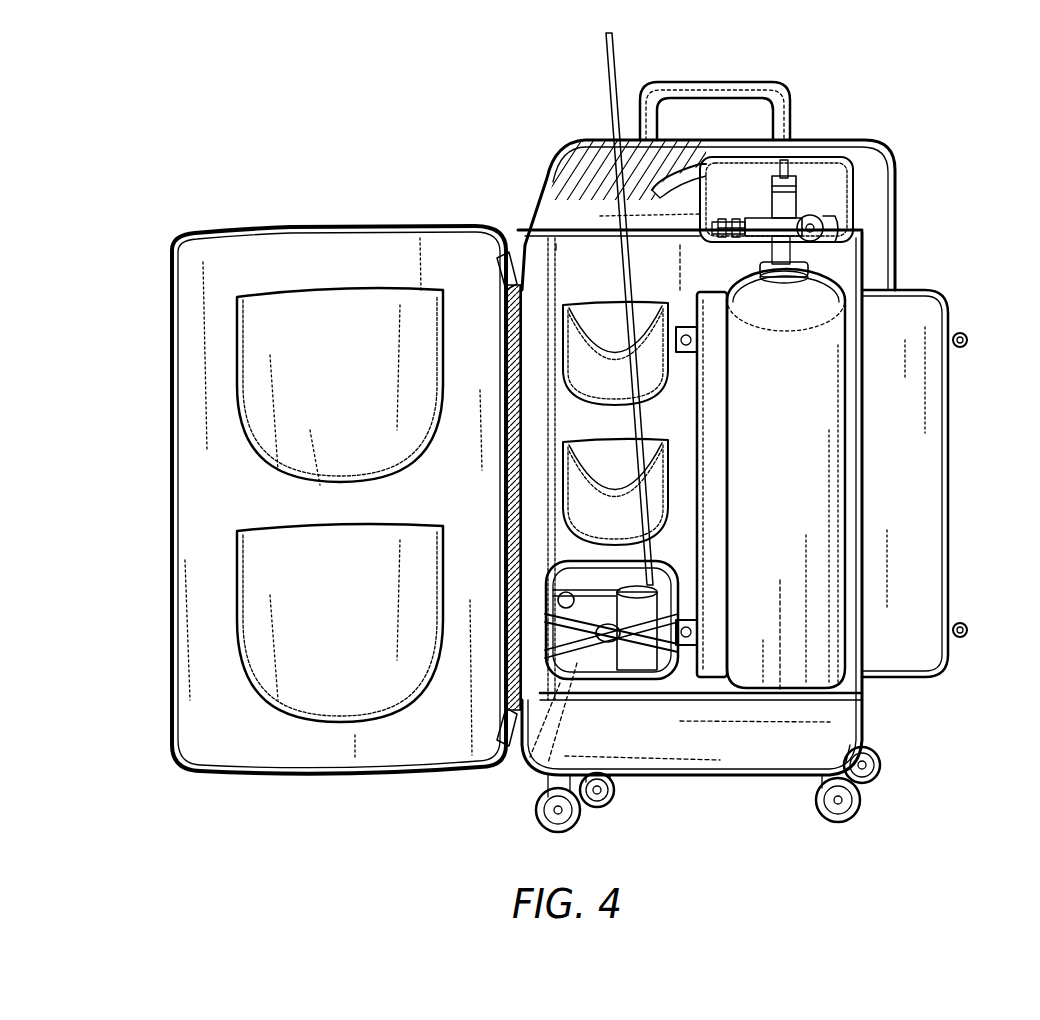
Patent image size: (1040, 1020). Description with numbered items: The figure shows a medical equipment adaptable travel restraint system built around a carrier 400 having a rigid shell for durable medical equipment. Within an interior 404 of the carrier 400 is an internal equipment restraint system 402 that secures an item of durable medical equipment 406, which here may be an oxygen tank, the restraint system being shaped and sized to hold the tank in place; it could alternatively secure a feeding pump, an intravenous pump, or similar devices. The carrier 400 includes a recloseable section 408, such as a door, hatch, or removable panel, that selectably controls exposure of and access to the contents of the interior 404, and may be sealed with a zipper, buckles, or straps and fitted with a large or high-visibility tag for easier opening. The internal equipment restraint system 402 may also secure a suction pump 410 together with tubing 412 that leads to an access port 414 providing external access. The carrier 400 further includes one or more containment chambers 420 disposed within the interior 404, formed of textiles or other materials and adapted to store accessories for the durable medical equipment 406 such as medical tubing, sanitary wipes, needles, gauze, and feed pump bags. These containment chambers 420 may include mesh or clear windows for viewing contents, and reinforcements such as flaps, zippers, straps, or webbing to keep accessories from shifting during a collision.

The carrier 400 is at (848, 132).
The internal equipment restraint system 402 is at (905, 306).
The interior 404 is at (598, 258).
The durable medical equipment 406 is at (836, 226).
The recloseable section 408 is at (284, 228).
The suction pump 410 is at (605, 653).
The tubing 412 is at (607, 58).
The access port 414 is at (622, 188).
The containment chambers 420 is at (248, 452).